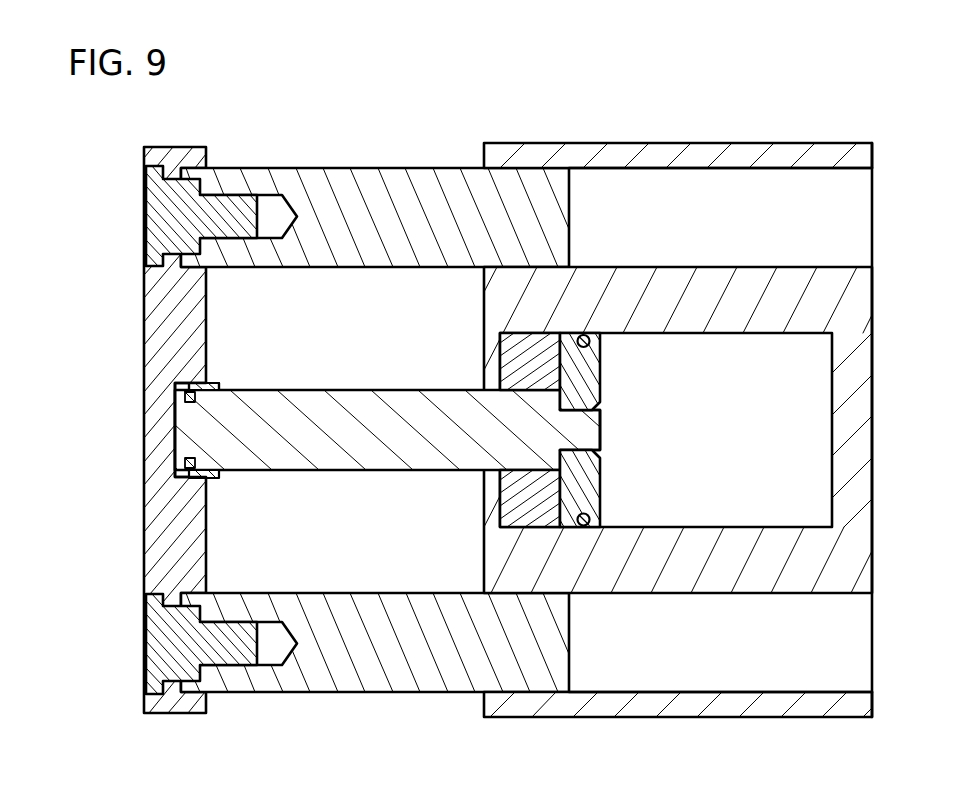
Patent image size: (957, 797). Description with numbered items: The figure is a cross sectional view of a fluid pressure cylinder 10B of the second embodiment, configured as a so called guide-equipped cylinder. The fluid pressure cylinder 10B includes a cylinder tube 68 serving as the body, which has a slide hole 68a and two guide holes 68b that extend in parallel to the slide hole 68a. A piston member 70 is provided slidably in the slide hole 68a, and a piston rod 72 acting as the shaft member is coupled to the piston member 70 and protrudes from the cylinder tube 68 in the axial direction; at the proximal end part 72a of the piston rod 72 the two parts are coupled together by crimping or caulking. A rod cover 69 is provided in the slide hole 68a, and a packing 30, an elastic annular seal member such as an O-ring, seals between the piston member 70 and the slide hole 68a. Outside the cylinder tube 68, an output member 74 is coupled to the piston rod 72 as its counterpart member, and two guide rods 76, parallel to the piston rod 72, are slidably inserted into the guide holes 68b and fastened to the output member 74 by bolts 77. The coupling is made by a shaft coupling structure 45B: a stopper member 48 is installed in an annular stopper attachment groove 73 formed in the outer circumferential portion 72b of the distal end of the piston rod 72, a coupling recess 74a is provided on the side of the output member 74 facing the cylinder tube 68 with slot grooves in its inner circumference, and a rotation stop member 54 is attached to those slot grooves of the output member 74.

The fluid pressure cylinder 10B is at (277, 97).
The packing 30 is at (584, 334).
The shaft coupling structure 45B is at (233, 381).
The stopper member 48 is at (186, 404).
The rotation stop member 54 is at (212, 382).
The cylinder tube 68 is at (798, 138).
The slide hole 68a is at (802, 476).
The guide hole 68b is at (704, 168).
The rod cover 69 is at (517, 358).
The piston member 70 is at (596, 376).
The piston rod 72 is at (333, 472).
The proximal end part 72a is at (586, 430).
The outer circumferential portion 72b is at (213, 480).
The stopper attachment groove 73 is at (178, 464).
The output member 74 is at (138, 358).
The coupling recess 74a is at (177, 440).
The guide rod 76 is at (332, 182).
The bolt 77 is at (160, 211).